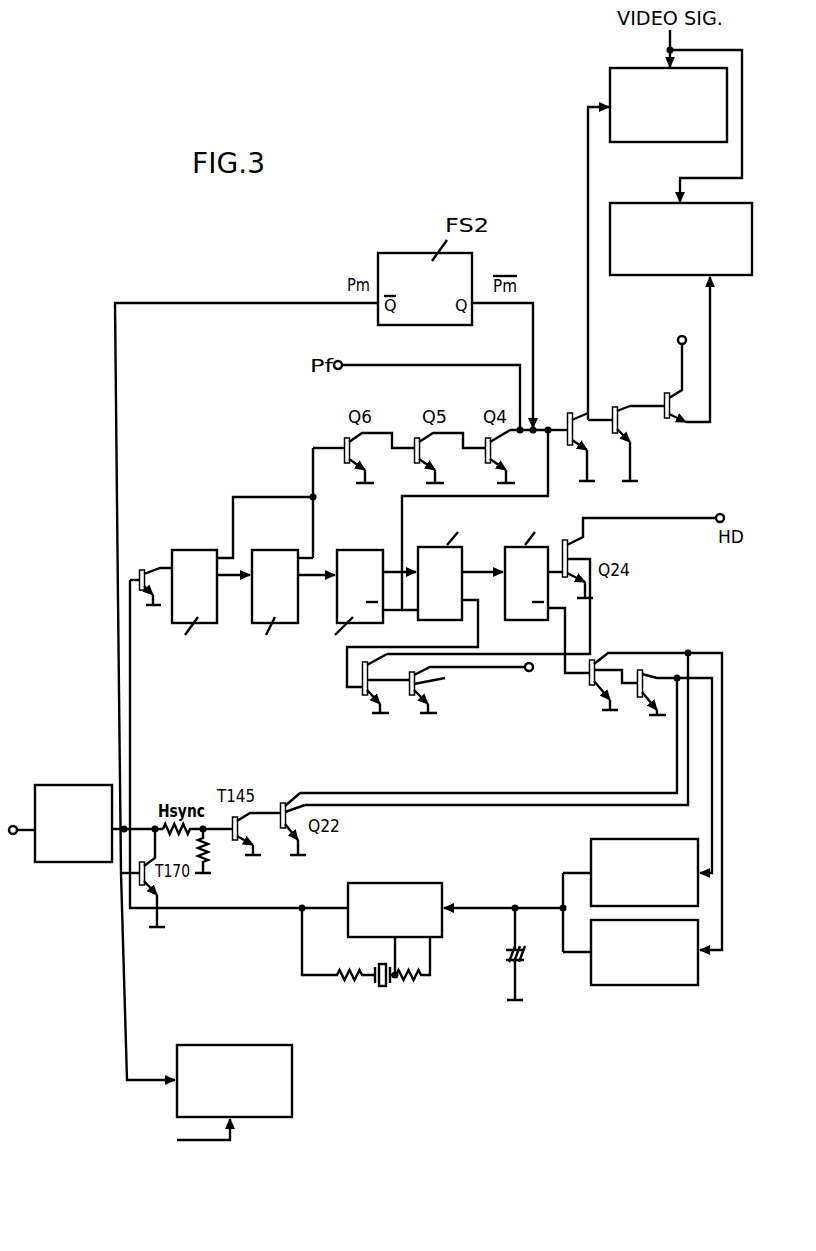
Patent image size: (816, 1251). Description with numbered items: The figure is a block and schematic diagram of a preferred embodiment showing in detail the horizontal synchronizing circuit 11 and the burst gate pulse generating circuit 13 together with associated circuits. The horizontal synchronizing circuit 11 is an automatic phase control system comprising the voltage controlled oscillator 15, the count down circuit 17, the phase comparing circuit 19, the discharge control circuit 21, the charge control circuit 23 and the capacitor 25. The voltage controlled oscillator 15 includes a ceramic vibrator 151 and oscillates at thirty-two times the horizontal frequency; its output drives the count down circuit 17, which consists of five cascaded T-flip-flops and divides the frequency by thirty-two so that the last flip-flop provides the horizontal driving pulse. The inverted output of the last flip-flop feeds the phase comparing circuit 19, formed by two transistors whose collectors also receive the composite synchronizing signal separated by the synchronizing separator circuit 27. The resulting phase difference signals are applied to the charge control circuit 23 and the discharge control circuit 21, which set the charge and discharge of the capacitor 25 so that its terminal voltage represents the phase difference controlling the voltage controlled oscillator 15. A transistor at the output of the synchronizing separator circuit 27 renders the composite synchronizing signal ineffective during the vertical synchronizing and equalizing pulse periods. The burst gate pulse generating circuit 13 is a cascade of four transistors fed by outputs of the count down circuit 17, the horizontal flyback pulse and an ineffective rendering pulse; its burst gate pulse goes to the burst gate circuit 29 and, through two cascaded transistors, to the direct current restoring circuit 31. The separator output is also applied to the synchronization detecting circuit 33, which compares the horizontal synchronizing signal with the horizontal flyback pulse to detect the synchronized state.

The burst gate circuit 29 is at (610, 84).
The direct current restoring circuit 31 is at (631, 200).
The burst gate pulse generating circuit 13 is at (573, 367).
The count down circuit 17 is at (223, 657).
The horizontal synchronizing circuit 11 is at (433, 770).
The phase comparing circuit 19 is at (633, 713).
The synchronizing separator circuit 27 is at (83, 862).
The voltage controlled oscillator 15 is at (425, 893).
The ceramic vibrator 151 is at (376, 986).
The capacitor 25 is at (514, 958).
The discharge control circuit 21 is at (591, 852).
The charge control circuit 23 is at (593, 970).
The synchronization detecting circuit 33 is at (292, 1078).